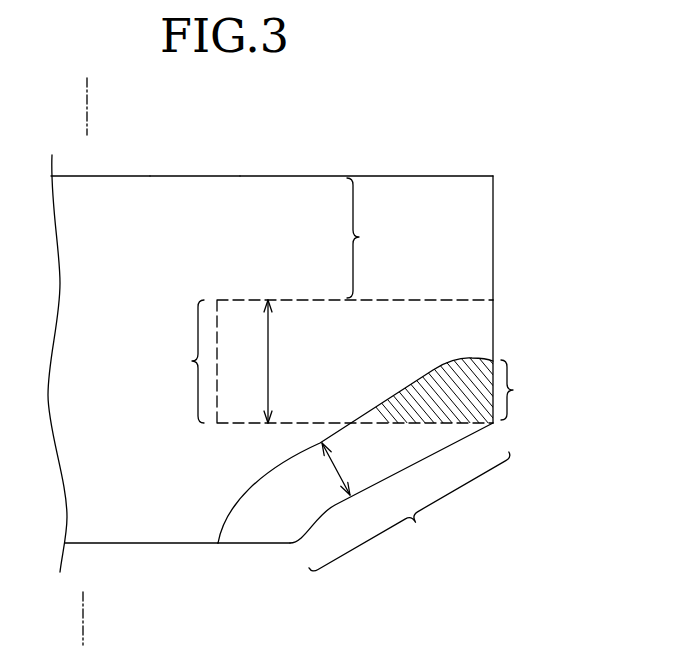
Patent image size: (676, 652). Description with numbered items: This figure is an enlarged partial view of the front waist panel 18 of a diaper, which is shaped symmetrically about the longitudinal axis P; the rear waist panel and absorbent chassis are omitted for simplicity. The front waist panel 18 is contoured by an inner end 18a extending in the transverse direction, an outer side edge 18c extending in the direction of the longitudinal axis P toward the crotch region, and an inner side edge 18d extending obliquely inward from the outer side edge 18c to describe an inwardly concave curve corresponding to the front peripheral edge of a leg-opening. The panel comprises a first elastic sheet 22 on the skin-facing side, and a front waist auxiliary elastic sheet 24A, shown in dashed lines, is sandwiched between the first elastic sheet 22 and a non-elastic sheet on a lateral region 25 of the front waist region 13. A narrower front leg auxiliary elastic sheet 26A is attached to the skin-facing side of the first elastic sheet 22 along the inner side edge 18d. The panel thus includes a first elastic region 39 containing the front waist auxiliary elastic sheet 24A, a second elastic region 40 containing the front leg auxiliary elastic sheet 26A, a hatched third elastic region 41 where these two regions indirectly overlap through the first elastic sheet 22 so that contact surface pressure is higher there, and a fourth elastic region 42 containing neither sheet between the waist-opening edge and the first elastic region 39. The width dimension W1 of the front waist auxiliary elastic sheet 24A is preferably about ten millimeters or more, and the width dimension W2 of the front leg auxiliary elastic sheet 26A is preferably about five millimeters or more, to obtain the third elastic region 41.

The longitudinal axis P is at (87, 93).
The front waist region 13 is at (468, 208).
The front waist panel 18 is at (263, 158).
The inner end 18a is at (140, 545).
The outer side edge 18c is at (493, 308).
The inner side edge 18d is at (457, 438).
The first elastic sheet 22 is at (117, 197).
The front waist auxiliary elastic sheet 24A is at (431, 299).
The lateral region 25 is at (184, 190).
The front leg auxiliary elastic sheet 26A is at (250, 530).
The first elastic region 39 is at (178, 361).
The second elastic region 40 is at (412, 516).
The third elastic region 41 is at (440, 382).
The fourth elastic region 42 is at (374, 238).
The width dimension of the front waist auxiliary elastic sheet W1 is at (270, 358).
The width dimension of the front leg auxiliary elastic sheet W2 is at (336, 463).